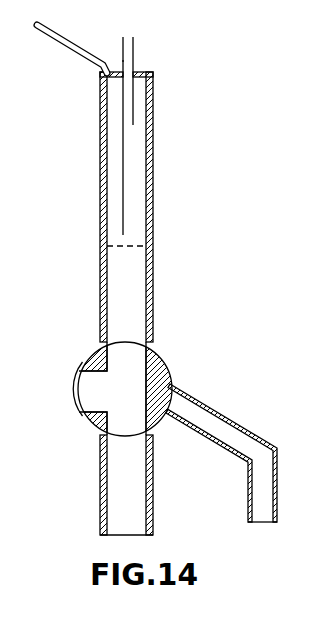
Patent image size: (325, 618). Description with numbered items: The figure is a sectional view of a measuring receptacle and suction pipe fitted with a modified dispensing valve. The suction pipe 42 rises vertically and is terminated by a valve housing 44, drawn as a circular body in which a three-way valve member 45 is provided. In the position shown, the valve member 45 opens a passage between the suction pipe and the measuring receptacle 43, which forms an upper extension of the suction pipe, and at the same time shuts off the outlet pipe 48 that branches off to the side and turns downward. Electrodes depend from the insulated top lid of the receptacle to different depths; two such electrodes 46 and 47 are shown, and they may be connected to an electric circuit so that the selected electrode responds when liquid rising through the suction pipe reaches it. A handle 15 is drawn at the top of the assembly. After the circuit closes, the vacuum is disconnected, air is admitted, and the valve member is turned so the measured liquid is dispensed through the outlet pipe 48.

The handle 15 is at (72, 44).
The suction pipe 42 is at (137, 507).
The measuring receptacle 43 is at (125, 292).
The valve housing 44 is at (166, 359).
The three-way valve member 45 is at (155, 413).
The electrode 46 is at (123, 180).
The electrode 47 is at (135, 52).
The outlet pipe 48 is at (278, 423).